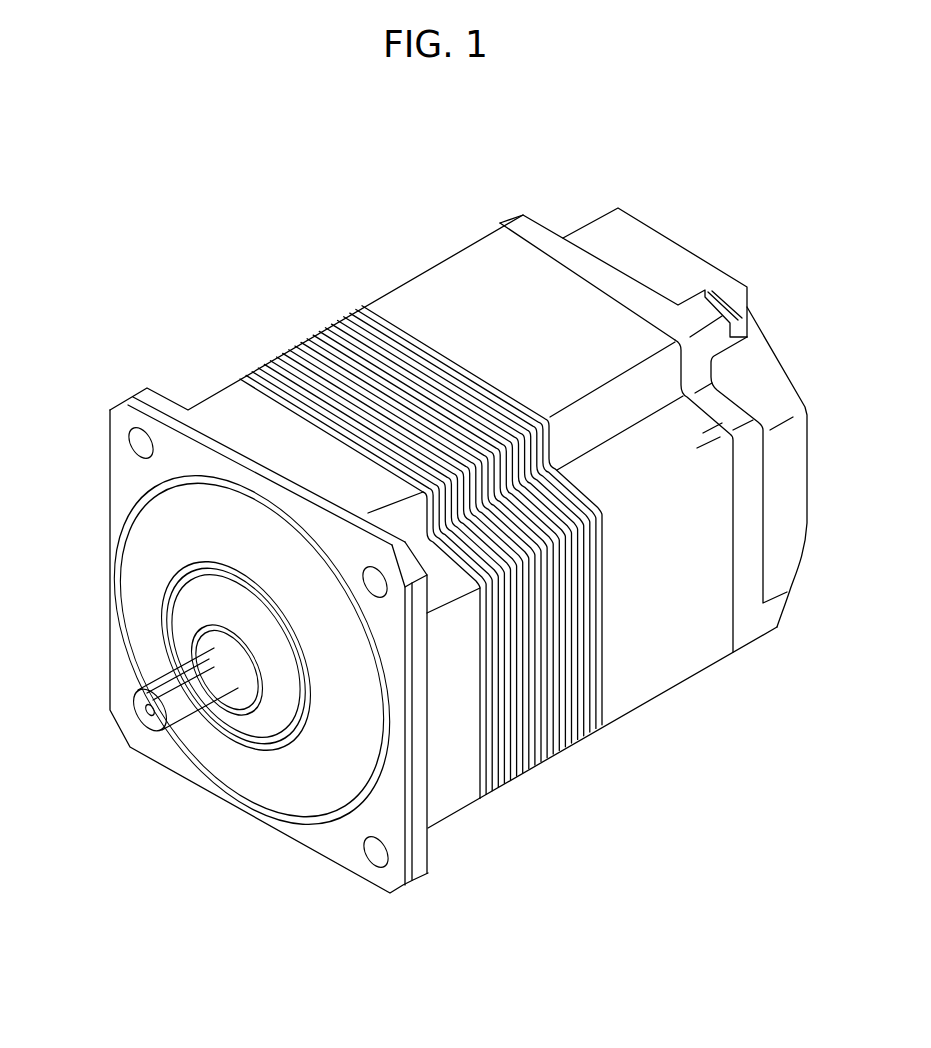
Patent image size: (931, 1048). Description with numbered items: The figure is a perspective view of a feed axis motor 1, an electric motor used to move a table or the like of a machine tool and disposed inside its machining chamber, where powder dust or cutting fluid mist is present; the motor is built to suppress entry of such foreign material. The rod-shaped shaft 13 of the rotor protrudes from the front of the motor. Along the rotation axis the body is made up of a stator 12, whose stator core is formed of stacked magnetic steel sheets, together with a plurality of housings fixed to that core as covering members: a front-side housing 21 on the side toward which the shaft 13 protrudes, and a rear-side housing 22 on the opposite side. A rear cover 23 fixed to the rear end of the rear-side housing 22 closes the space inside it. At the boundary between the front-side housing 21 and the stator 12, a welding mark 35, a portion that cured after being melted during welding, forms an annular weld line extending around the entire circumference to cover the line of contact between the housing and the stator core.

The feed axis motor 1 is at (635, 180).
The stator 12 is at (556, 753).
The shaft 13 is at (162, 684).
The front-side housing 21 is at (449, 788).
The rear-side housing 22 is at (661, 661).
The rear cover 23 is at (751, 618).
The welding mark 35 is at (392, 326).